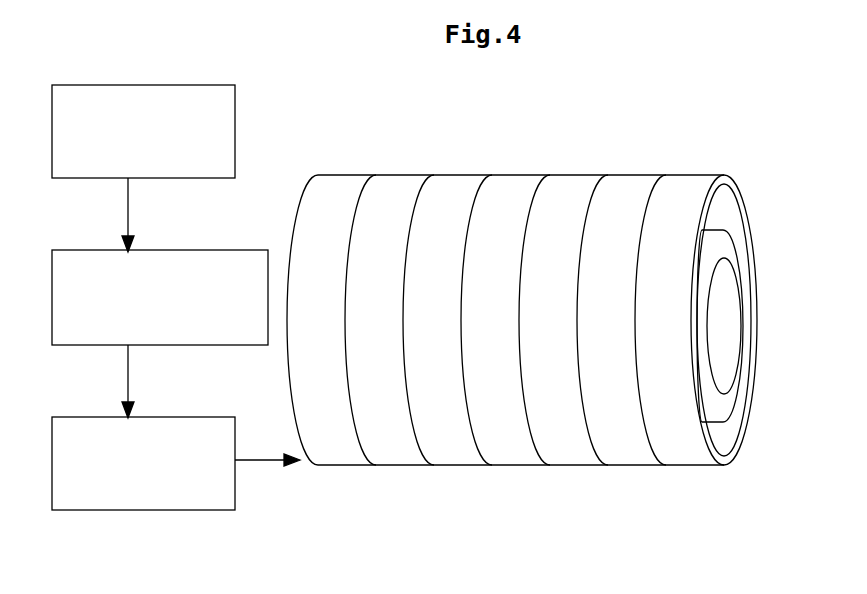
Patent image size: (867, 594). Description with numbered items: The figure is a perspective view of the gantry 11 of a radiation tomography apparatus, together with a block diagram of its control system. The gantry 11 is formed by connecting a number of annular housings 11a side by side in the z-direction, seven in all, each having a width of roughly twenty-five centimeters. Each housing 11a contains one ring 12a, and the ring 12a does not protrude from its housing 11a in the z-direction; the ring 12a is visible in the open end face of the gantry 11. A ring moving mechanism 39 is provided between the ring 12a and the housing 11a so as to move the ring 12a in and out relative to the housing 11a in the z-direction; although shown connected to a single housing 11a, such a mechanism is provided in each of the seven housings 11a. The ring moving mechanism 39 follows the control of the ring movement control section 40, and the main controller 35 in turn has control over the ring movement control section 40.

The main controller 35 is at (237, 101).
The ring movement control section 40 is at (81, 250).
The ring moving mechanism 39 is at (102, 510).
The gantry 11 is at (552, 321).
The housing 11a is at (434, 472).
The ring 12a is at (757, 326).